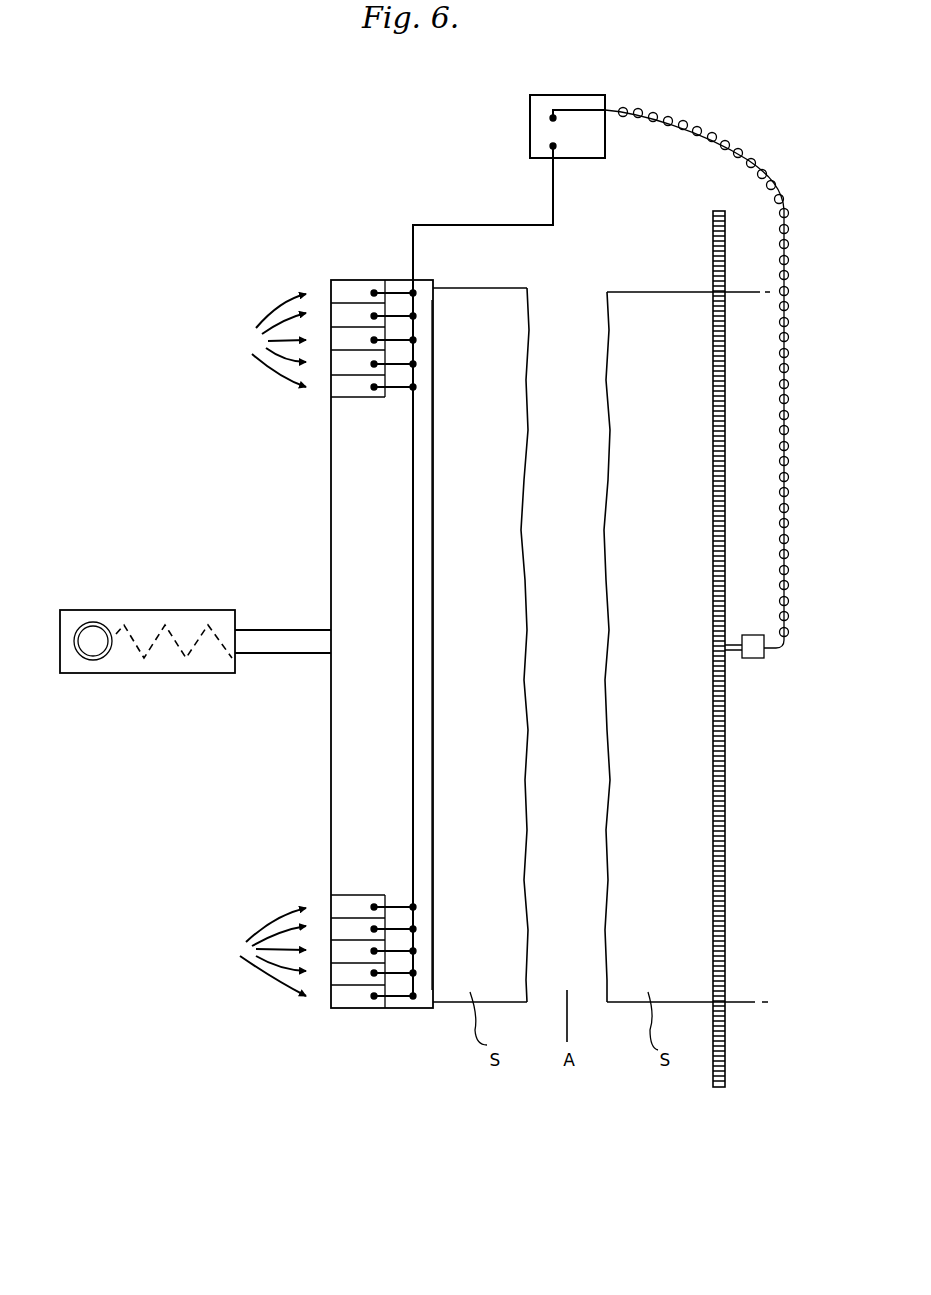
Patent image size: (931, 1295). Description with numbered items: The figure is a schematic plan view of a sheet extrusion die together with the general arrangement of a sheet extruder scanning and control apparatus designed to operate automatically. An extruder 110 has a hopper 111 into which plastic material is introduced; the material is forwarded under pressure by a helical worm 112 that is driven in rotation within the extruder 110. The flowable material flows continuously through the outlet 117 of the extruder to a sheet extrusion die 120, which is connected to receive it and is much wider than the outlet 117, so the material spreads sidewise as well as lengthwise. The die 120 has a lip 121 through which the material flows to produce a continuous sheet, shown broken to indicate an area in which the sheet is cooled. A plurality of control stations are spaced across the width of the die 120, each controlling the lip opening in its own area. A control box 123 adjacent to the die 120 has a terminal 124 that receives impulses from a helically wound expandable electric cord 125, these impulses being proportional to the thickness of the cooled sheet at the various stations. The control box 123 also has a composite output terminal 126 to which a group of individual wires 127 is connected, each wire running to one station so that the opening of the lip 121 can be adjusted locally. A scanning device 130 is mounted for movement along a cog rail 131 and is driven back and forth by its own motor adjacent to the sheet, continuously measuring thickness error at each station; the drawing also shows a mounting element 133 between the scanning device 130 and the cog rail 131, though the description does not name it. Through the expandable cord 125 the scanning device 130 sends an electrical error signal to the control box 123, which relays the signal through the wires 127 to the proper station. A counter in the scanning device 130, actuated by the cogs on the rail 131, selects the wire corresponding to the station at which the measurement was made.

The extruder 110 is at (144, 673).
The hopper 111 is at (92, 660).
The helical worm 112 is at (130, 624).
The outlet 117 is at (293, 655).
The sheet extrusion die 120 is at (334, 458).
The lip 121 is at (434, 613).
The control box 123 is at (530, 122).
The terminal 124 is at (550, 117).
The helically wound expandable electric cord 125 is at (786, 545).
The composite output terminal 126 is at (550, 146).
The individual wires 127 is at (441, 224).
The scanning device 130 is at (755, 658).
The cog rail 131 is at (726, 812).
The bracket arm 133 is at (720, 646).